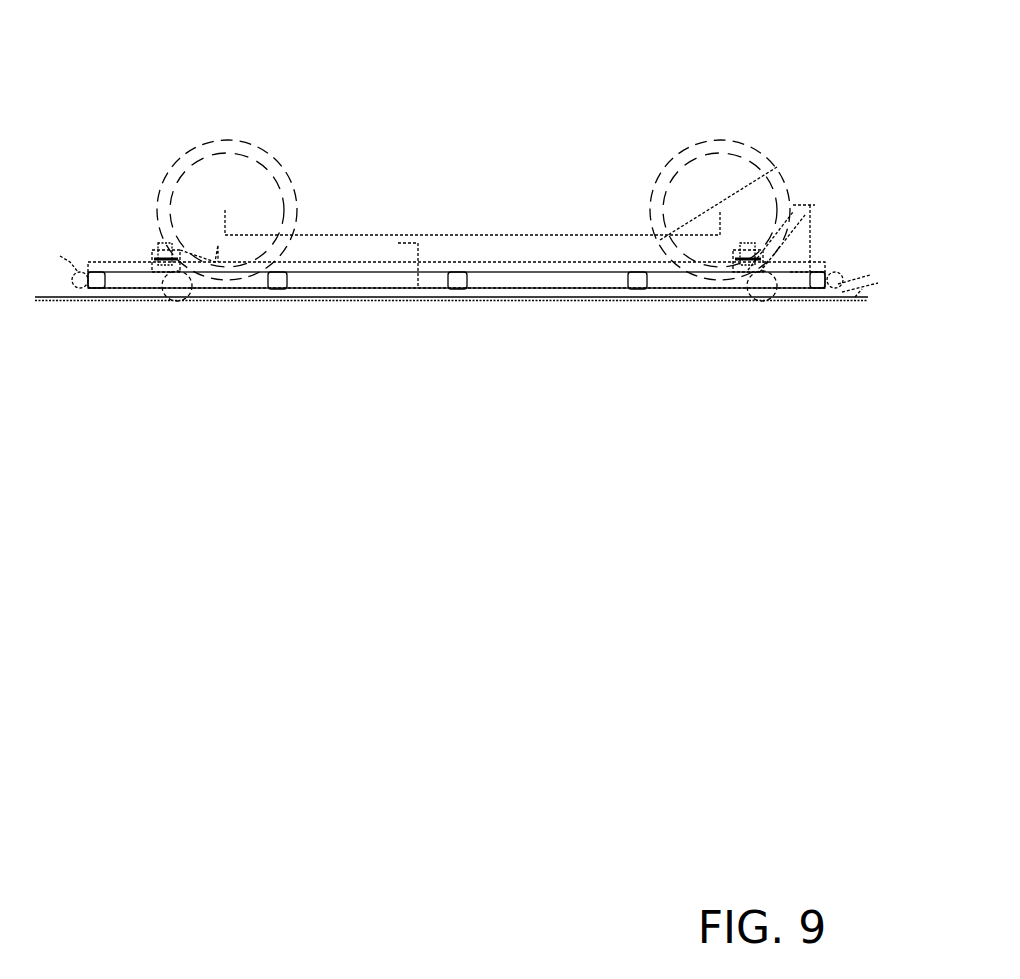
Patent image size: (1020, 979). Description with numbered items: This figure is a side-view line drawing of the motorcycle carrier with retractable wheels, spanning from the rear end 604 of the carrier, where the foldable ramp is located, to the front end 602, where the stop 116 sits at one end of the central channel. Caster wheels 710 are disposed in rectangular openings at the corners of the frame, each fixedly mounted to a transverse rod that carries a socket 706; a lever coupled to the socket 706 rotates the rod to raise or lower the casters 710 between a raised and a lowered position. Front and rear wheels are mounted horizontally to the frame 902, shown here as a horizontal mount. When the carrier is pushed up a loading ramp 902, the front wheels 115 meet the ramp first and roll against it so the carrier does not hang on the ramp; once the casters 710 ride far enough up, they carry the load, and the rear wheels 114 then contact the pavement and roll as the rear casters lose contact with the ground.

The rear wheels 114 is at (85, 272).
The front wheels 115 is at (823, 290).
The stop 116 is at (792, 207).
The socket 706 is at (163, 248).
The caster wheels 710 is at (177, 296).
The loading ramp 902 is at (83, 288).
The ramp end 604 is at (54, 448).
The stop end 602 is at (866, 447).